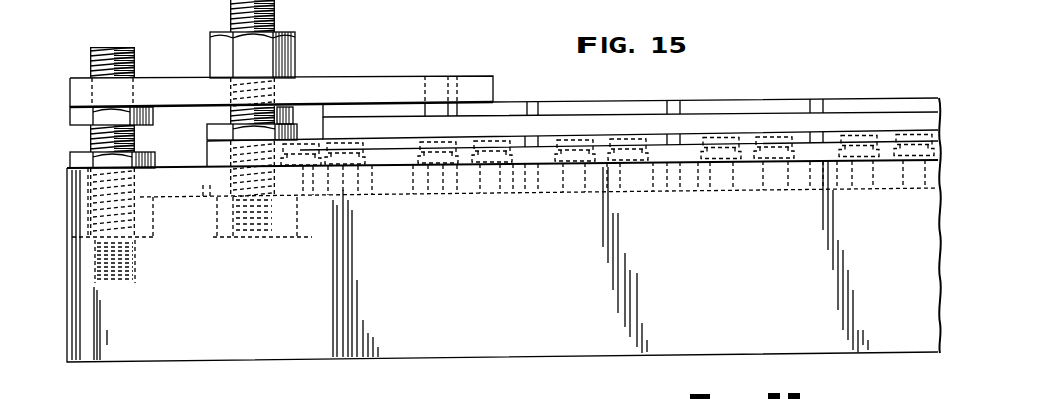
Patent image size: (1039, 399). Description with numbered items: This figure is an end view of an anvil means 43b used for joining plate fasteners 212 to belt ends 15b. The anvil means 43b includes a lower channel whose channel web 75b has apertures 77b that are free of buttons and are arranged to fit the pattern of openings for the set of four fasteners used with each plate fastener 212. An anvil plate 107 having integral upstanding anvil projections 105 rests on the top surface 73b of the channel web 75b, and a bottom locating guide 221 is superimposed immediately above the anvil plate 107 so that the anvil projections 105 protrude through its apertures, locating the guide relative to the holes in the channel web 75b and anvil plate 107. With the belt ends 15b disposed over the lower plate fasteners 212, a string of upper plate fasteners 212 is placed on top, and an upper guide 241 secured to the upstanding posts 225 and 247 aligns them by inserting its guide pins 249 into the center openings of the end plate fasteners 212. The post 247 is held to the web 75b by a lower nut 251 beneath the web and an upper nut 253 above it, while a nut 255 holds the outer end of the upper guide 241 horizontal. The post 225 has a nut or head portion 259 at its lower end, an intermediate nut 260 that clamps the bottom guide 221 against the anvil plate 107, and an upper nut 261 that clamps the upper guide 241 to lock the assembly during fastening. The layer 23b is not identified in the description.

The second upstanding post 247 is at (131, 119).
The nut 255 is at (70, 114).
The upper guide 241 is at (173, 80).
The upstanding post 225 is at (292, 105).
The upper nut 261 is at (292, 41).
The intermediate nut 260 is at (300, 112).
The top surface of the channel web 73b is at (188, 165).
The plate 23b is at (345, 117).
The belt end 15b is at (382, 123).
The guide pin 249 is at (451, 103).
The plate fastener 212 is at (560, 102).
The anvil projection 105 is at (455, 139).
The upper nut 253 is at (155, 165).
The bottom locating guide 221 is at (393, 143).
The aperture 77b is at (574, 197).
The anvil plate 107 is at (690, 194).
The anvil means 43b is at (478, 360).
The channel web 75b is at (204, 197).
The nut or head portion 259 is at (258, 240).
The lower nut 251 is at (145, 240).